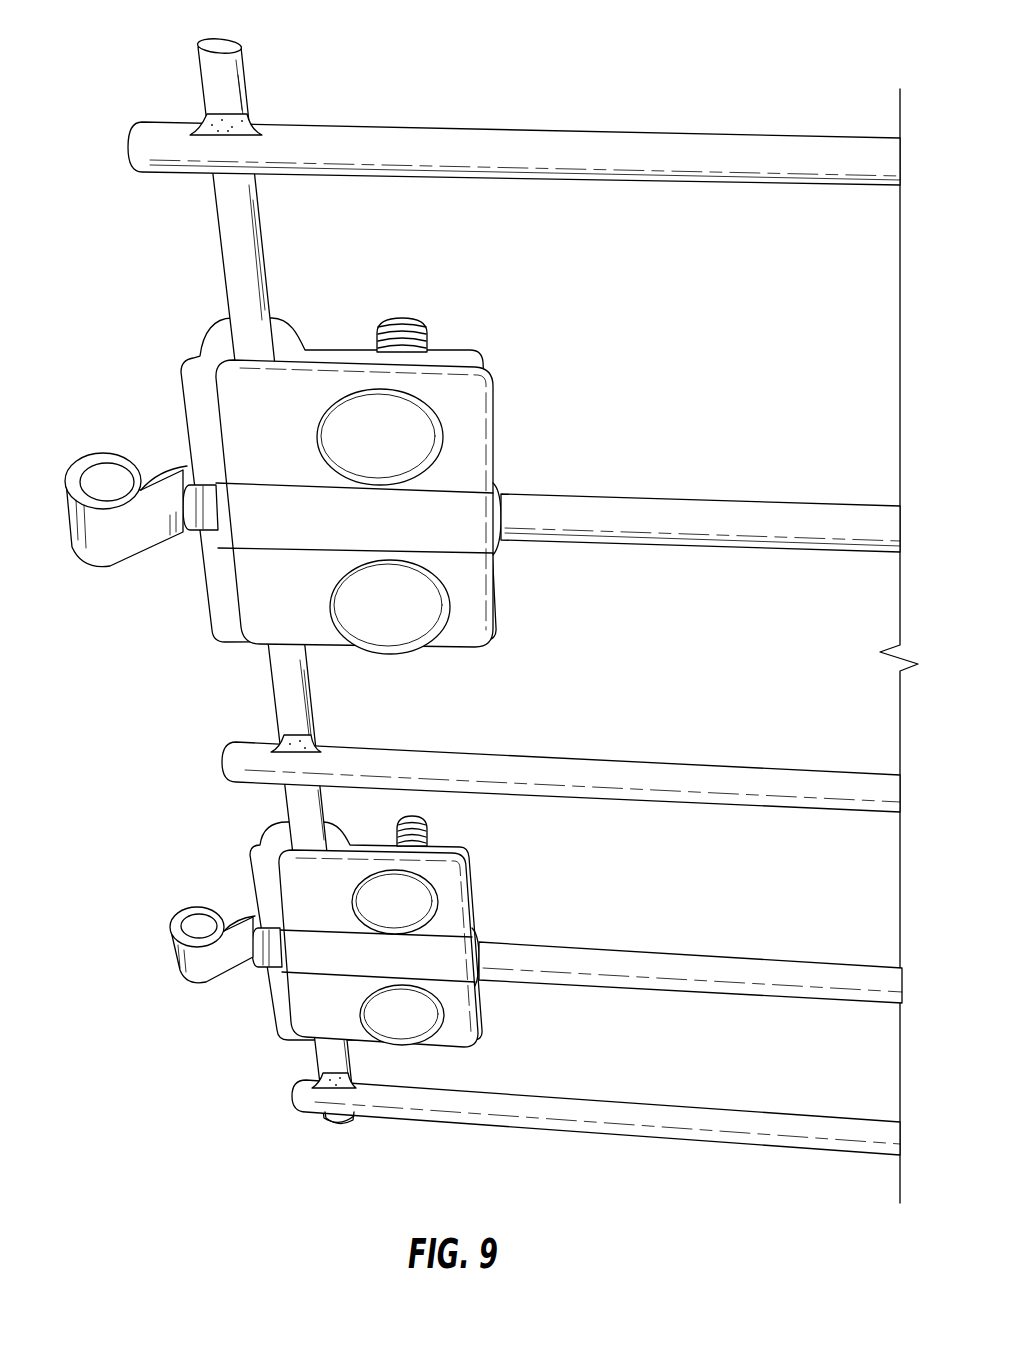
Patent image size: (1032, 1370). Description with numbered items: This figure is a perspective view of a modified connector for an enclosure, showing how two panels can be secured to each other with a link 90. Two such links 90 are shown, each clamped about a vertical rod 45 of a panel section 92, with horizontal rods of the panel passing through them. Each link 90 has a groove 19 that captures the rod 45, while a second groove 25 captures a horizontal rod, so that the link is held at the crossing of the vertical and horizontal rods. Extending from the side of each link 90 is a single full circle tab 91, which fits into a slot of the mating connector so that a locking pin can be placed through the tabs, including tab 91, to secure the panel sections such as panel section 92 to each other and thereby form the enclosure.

The groove 19 is at (205, 345).
The groove 25 is at (455, 500).
The rod 45 is at (253, 249).
The link 90 is at (456, 353).
The full circle tab 91 is at (88, 530).
The panel section 92 is at (524, 135).